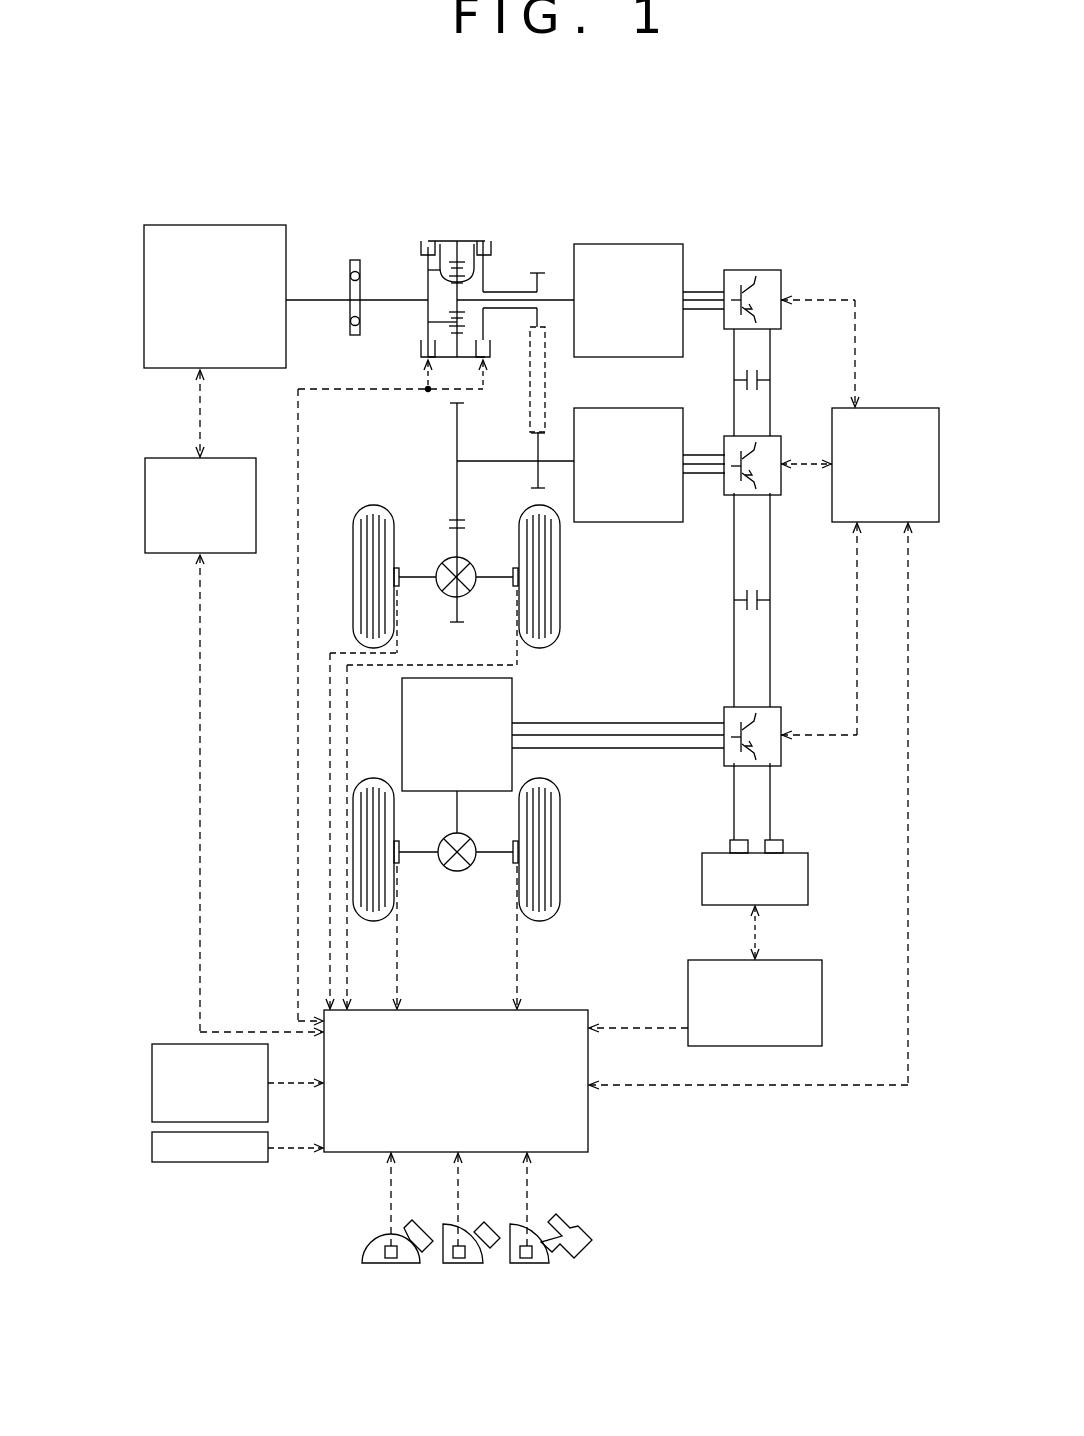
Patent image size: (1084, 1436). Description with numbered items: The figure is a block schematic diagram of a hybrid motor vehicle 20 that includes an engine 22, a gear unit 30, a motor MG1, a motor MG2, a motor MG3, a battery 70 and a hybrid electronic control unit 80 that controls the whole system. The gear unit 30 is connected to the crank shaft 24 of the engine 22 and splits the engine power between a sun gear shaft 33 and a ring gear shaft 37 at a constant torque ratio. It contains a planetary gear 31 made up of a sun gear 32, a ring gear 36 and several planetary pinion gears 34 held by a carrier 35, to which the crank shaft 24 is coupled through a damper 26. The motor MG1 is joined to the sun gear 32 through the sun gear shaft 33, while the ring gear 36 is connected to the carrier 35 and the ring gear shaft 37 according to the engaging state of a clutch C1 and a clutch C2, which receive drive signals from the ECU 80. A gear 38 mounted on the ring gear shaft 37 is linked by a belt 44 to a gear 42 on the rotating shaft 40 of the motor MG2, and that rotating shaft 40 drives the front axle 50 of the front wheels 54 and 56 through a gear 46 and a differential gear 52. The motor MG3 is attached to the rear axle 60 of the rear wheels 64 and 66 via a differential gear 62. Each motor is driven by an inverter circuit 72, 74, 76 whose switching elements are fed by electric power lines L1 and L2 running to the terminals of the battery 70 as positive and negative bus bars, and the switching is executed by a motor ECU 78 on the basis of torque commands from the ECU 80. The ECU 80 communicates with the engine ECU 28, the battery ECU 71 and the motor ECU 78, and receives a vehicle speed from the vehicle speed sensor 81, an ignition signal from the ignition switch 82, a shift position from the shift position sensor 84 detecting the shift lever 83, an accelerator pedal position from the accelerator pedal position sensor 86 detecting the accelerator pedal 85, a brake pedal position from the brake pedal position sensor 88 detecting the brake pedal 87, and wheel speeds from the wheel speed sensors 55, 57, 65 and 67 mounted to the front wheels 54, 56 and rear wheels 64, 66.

The hybrid motor vehicle 20 is at (841, 142).
The engine 22 is at (207, 225).
The crank shaft 24 is at (312, 300).
The damper 26 is at (352, 264).
The engine ECU 28 is at (247, 458).
The gear unit 30 is at (613, 142).
The planetary gear 31 is at (385, 146).
The sun gear 32 is at (441, 246).
The sun gear shaft 33 is at (557, 300).
The planetary pinion gears 34 is at (484, 245).
The carrier 35 is at (430, 268).
The ring gear 36 is at (457, 260).
The ring gear shaft 37 is at (510, 292).
The gear 38 is at (546, 273).
The rotating shaft 40 is at (489, 462).
The gear 42 is at (538, 455).
The belt 44 is at (547, 380).
The gear 46 is at (456, 449).
The front axle 50 is at (412, 574).
The differential gear 52 is at (471, 562).
The front wheel 54 is at (355, 525).
The wheel speed sensor 55 is at (400, 596).
The front wheel 56 is at (560, 590).
The wheel speed sensor 57 is at (512, 596).
The rear axle 60 is at (414, 856).
The differential gear 62 is at (470, 866).
The rear wheel 64 is at (375, 925).
The wheel speed sensor 65 is at (400, 843).
The rear wheel 66 is at (560, 860).
The wheel speed sensor 67 is at (495, 828).
The battery 70 is at (808, 878).
The battery ECU 71 is at (822, 995).
The inverter circuit 72 is at (772, 270).
The inverter circuit 74 is at (782, 485).
The inverter circuit 76 is at (782, 712).
The motor ECU 78 is at (908, 408).
The hybrid electronic control unit 80 is at (582, 1010).
The vehicle speed sensor 81 is at (151, 1078).
The ignition switch 82 is at (200, 1163).
The shift lever 83 is at (422, 1224).
The shift position sensor 84 is at (385, 1265).
The accelerator pedal 85 is at (570, 1252).
The accelerator pedal position sensor 86 is at (535, 1265).
The brake pedal 87 is at (492, 1250).
The brake pedal position sensor 88 is at (458, 1265).
The clutch C1 is at (421, 350).
The clutch C2 is at (488, 350).
The motor MG1 is at (655, 244).
The motor MG2 is at (630, 522).
The motor MG3 is at (512, 702).
The electric power line L1 is at (733, 802).
The electric power line L2 is at (771, 803).